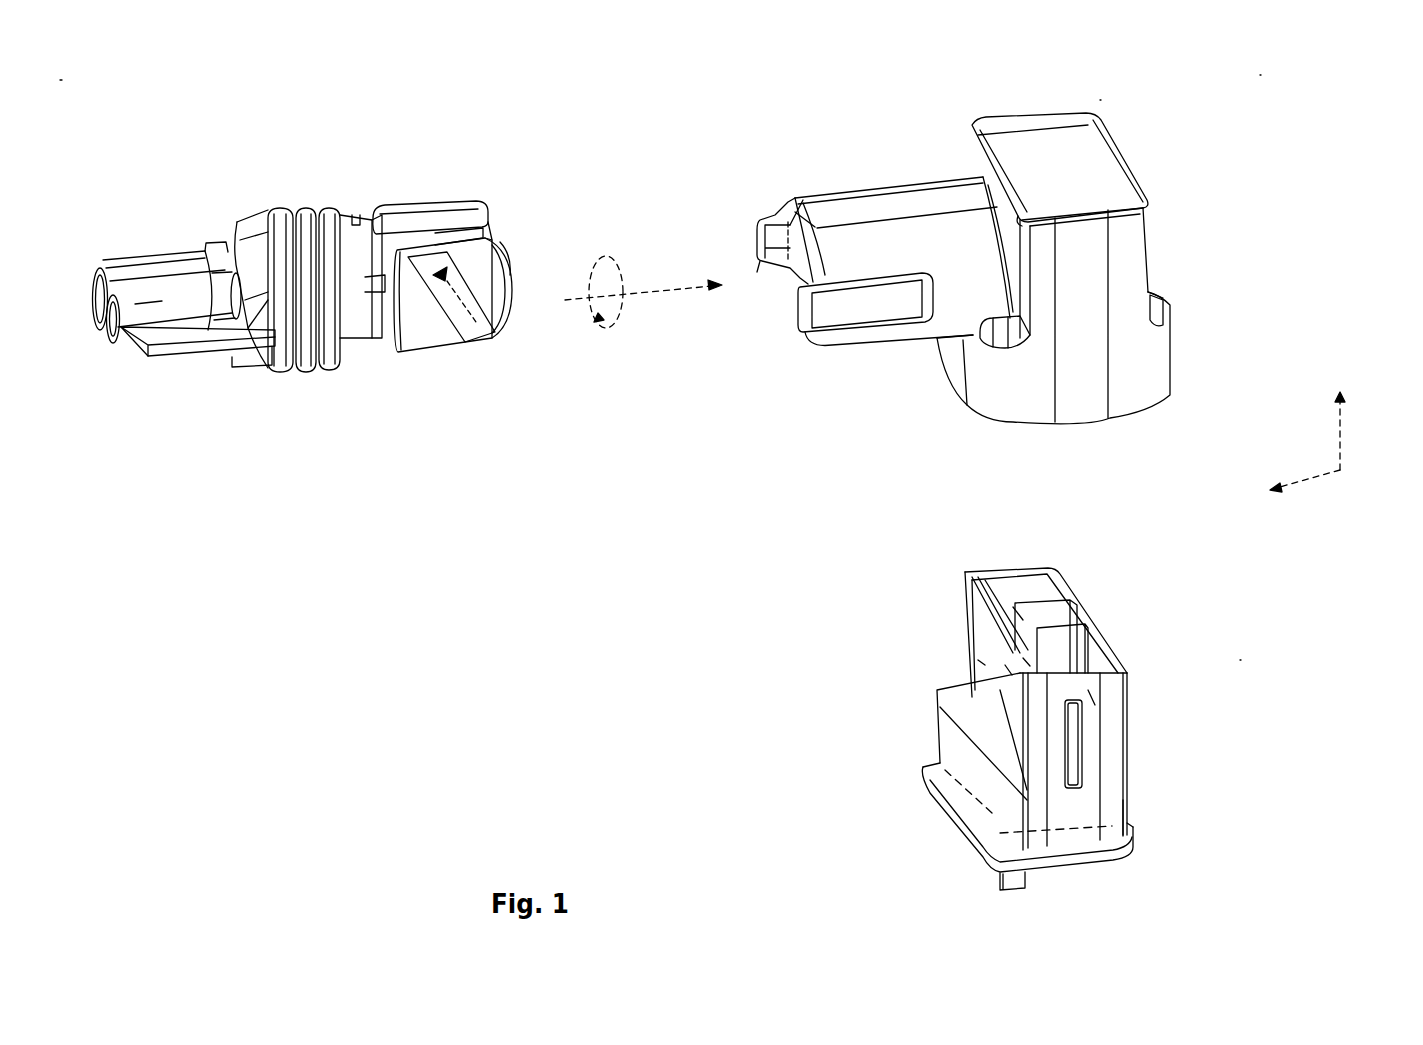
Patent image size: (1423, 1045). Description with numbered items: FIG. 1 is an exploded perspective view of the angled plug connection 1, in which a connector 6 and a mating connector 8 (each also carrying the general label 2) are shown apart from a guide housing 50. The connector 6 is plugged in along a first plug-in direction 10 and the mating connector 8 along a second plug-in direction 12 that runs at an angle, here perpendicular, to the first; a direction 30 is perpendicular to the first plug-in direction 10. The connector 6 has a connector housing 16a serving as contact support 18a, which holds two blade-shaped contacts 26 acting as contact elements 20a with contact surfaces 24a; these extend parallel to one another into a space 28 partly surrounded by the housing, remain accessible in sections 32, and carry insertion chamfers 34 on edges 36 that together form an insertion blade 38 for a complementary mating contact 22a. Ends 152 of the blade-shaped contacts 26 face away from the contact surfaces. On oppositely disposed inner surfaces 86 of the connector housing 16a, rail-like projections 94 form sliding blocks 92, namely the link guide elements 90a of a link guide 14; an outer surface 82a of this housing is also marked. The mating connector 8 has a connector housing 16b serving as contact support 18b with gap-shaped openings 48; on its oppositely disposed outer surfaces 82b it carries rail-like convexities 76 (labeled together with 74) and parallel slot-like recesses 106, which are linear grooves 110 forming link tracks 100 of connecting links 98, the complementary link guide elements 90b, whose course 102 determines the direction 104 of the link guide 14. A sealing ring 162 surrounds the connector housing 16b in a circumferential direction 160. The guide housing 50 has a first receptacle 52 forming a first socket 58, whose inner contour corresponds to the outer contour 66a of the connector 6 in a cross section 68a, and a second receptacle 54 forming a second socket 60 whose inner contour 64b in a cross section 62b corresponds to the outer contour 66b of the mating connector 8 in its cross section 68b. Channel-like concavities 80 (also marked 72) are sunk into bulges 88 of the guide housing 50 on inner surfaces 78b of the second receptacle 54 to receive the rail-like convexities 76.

The angled plug connection 1 is at (1236, 82).
The plug connector 2 is at (72, 70).
The connector 6 is at (1258, 688).
The mating connector 8 is at (114, 90).
The first plug-in direction 10 is at (1345, 416).
The second plug-in direction 12 is at (682, 297).
The link guide 14 is at (447, 307).
The connector housing 16a is at (1169, 671).
The connector housing 16b is at (382, 320).
The contact support 18a is at (1095, 700).
The contact support 18b is at (404, 345).
The contact element 20a is at (1095, 587).
The mating contact 22a is at (1095, 587).
The contact surface 24a is at (1020, 617).
The blade-shaped contact 26 is at (1015, 650).
The space 28 is at (987, 660).
The direction 30 is at (1305, 478).
The accessible section 32 is at (1030, 662).
The insertion chamfer 34 is at (1143, 608).
The edge 36 is at (1010, 672).
The insertion blade 38 is at (1045, 650).
The gap-shaped opening 48 is at (503, 221).
The guide housing 50 is at (1135, 122).
The first receptacle 52 is at (1054, 289).
The second receptacle 54 is at (831, 252).
The first socket 58 is at (1050, 425).
The second socket 60 is at (738, 228).
The cross section 62b is at (788, 183).
The inner contour 64b is at (792, 198).
The outer contour 66a is at (965, 817).
The outer contour 66b is at (570, 250).
The cross section 68a is at (953, 773).
The cross section 68b is at (508, 262).
The end wall 72 is at (805, 275).
The contact 74 is at (656, 530).
The rail-like convexity 76 is at (137, 257).
The inner surface 78b is at (818, 233).
The channel-like concavity 80 is at (761, 327).
The contact 82a is at (1085, 812).
The outer surface 82b is at (183, 248).
The inner surface 86 is at (980, 598).
The bulge 88 is at (777, 217).
The link guide element 90a is at (1030, 729).
The link guide element 90b is at (447, 307).
The sliding block 92 is at (1030, 729).
The rail-like projection 94 is at (970, 655).
The connecting link 98 is at (447, 307).
The link track 100 is at (447, 307).
The course 102 is at (494, 354).
The direction 104 is at (440, 330).
The slot-like recess 106 is at (447, 307).
The linear groove 110 is at (425, 212).
The end 152 is at (1012, 890).
The circumferential direction 160 is at (615, 333).
The sealing ring 162 is at (247, 227).